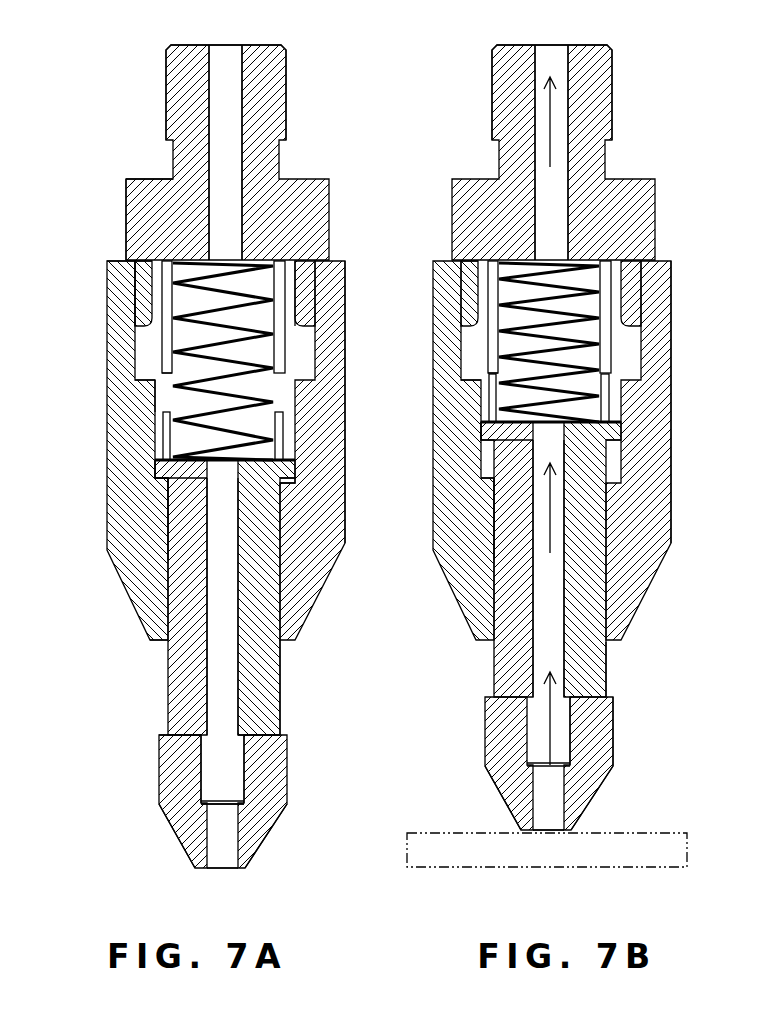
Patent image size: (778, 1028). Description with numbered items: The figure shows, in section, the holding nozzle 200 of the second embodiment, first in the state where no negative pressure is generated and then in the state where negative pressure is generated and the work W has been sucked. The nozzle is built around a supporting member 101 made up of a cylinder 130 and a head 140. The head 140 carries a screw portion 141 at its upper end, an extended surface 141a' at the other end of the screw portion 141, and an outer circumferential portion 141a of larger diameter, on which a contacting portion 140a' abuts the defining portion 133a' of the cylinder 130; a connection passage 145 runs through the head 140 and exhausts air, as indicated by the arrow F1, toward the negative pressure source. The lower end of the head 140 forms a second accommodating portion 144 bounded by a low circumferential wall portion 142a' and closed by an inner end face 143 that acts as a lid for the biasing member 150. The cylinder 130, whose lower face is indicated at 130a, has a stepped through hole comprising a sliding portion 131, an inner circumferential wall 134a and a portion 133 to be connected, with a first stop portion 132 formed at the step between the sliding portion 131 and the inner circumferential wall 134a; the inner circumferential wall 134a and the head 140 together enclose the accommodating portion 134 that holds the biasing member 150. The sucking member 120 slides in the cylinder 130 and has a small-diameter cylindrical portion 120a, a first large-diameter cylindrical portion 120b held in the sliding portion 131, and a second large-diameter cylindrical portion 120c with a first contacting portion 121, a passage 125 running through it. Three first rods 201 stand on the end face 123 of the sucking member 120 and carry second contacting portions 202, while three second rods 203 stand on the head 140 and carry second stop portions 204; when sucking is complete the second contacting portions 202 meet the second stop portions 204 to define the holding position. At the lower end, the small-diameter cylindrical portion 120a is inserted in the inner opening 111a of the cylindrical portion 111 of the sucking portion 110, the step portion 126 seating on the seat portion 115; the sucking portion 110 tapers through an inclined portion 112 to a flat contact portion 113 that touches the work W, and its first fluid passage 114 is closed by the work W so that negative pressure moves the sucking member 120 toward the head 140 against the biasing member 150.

In FIG. 7A, the holding nozzle 200 is at (168, 34).
In FIG. 7B, the holding nozzle 200 is at (494, 34).
In FIG. 7A, the supporting member 101 is at (373, 157).
In FIG. 7B, the supporting member 101 is at (695, 163).
In FIG. 7A, the head 140 is at (307, 200).
In FIG. 7B, the head 140 is at (634, 200).
In FIG. 7A, the screw portion 141 is at (166, 84).
In FIG. 7B, the screw portion 141 is at (492, 84).
In FIG. 7A, the outer circumferential portion 141a is at (90, 211).
In FIG. 7A, the extended surface 141a' is at (128, 156).
In FIG. 7A, the connection passage 145 is at (224, 52).
In FIG. 7B, the connection passage 145 is at (552, 52).
In FIG. 7A, the cylinder 130 is at (340, 262).
In FIG. 7B, the cylinder 130 is at (668, 262).
In FIG. 7A, the body bottom face 130a is at (163, 637).
In FIG. 7A, the portion to be connected 133 is at (147, 290).
In FIG. 7B, the portion to be connected 133 is at (473, 290).
In FIG. 7A, the defining portion 133a' is at (87, 227).
In FIG. 7A, the circumferential wall portion 142a' is at (83, 293).
In FIG. 7A, the inner end face 143 is at (330, 372).
In FIG. 7B, the inner end face 143 is at (643, 270).
In FIG. 7A, the contacting portion 140a' is at (344, 293).
In FIG. 7A, the biasing member 150 is at (124, 262).
In FIG. 7B, the biasing member 150 is at (450, 262).
In FIG. 7A, the second accommodating portion 144 is at (186, 330).
In FIG. 7B, the second accommodating portion 144 is at (512, 330).
In FIG. 7A, the second rods 203 is at (166, 343).
In FIG. 7B, the second rods 203 is at (492, 343).
In FIG. 7A, the second stop portions 204 is at (166, 376).
In FIG. 7B, the second stop portions 204 is at (492, 376).
In FIG. 7A, the second contacting portions 202 is at (165, 414).
In FIG. 7B, the second contacting portions 202 is at (608, 382).
In FIG. 7A, the first rods 201 is at (283, 442).
In FIG. 7B, the first rods 201 is at (602, 405).
In FIG. 7A, the accommodating portion 134 is at (150, 382).
In FIG. 7B, the accommodating portion 134 is at (478, 395).
In FIG. 7A, the inner circumferential wall 134a is at (157, 398).
In FIG. 7A, the end face 123 is at (180, 450).
In FIG. 7B, the end face 123 is at (505, 440).
In FIG. 7A, the first stop portion 132 is at (175, 470).
In FIG. 7B, the first stop portion 132 is at (500, 470).
In FIG. 7A, the sliding portion 131 is at (185, 513).
In FIG. 7B, the sliding portion 131 is at (510, 513).
In FIG. 7A, the sucking member 120 is at (178, 693).
In FIG. 7B, the sucking member 120 is at (504, 693).
In FIG. 7A, the flow passage 125 is at (217, 612).
In FIG. 7B, the flow passage 125 is at (543, 612).
In FIG. 7A, the first contacting portion 121 is at (343, 490).
In FIG. 7B, the first contacting portion 121 is at (668, 490).
In FIG. 7A, the second large-diameter cylindrical portion 120c is at (295, 478).
In FIG. 7B, the second large-diameter cylindrical portion 120c is at (618, 438).
In FIG. 7A, the first large-diameter cylindrical portion 120b is at (282, 693).
In FIG. 7B, the first large-diameter cylindrical portion 120b is at (606, 687).
In FIG. 7A, the small-diameter cylindrical portion 120a is at (263, 770).
In FIG. 7B, the small-diameter cylindrical portion 120a is at (573, 723).
In FIG. 7A, the seat portion 115 is at (270, 725).
In FIG. 7A, the sucking portion 110 is at (170, 795).
In FIG. 7B, the sucking portion 110 is at (505, 752).
In FIG. 7A, the step portion 126 is at (160, 737).
In FIG. 7A, the cylindrical portion 111 is at (220, 797).
In FIG. 7B, the cylindrical portion 111 is at (612, 747).
In FIG. 7A, the inner opening 111a is at (265, 808).
In FIG. 7A, the first fluid passage 114 is at (212, 838).
In FIG. 7B, the first fluid passage 114 is at (540, 795).
In FIG. 7A, the inclined portion 112 is at (265, 837).
In FIG. 7B, the inclined portion 112 is at (598, 785).
In FIG. 7A, the contact portion 113 is at (240, 868).
In FIG. 7B, the contact portion 113 is at (565, 835).
In FIG. 7B, the arrow F1 is at (553, 115).
In FIG. 7B, the work W is at (432, 870).